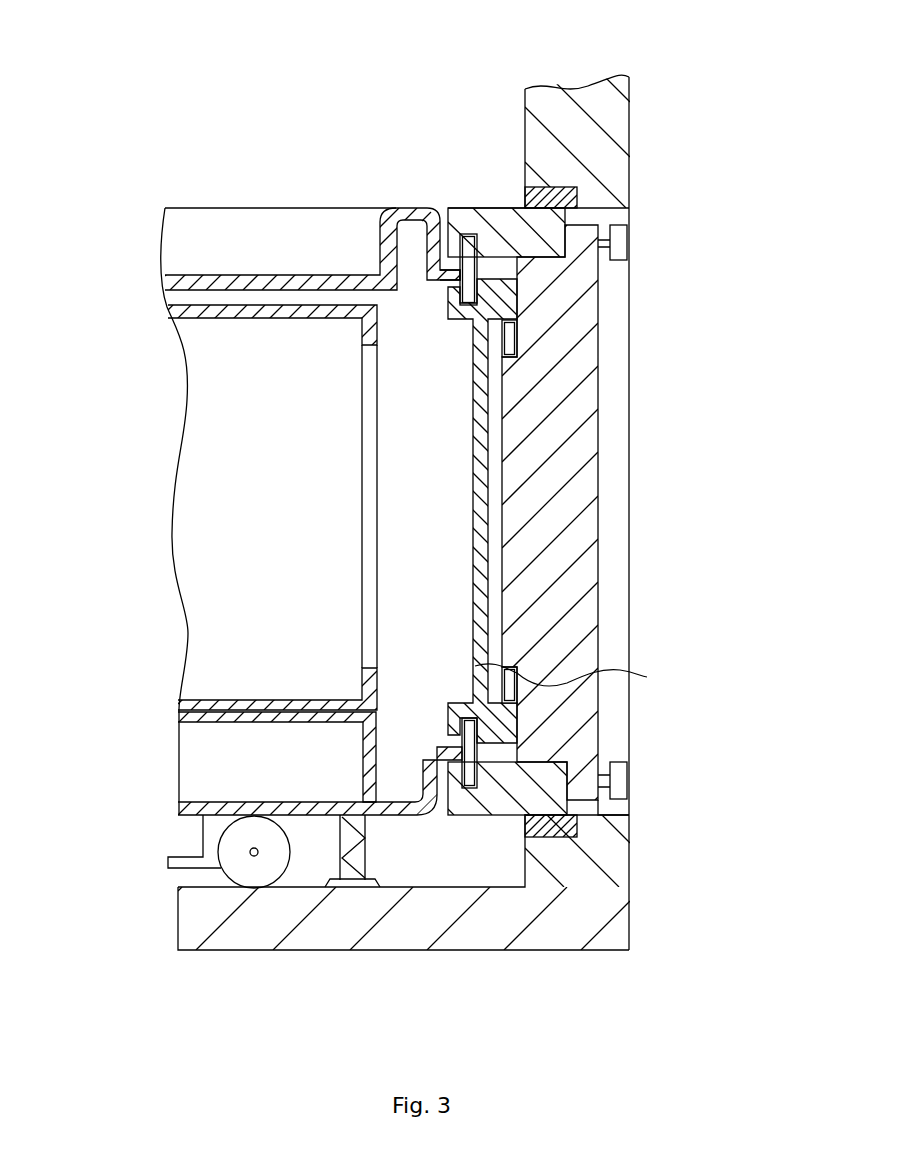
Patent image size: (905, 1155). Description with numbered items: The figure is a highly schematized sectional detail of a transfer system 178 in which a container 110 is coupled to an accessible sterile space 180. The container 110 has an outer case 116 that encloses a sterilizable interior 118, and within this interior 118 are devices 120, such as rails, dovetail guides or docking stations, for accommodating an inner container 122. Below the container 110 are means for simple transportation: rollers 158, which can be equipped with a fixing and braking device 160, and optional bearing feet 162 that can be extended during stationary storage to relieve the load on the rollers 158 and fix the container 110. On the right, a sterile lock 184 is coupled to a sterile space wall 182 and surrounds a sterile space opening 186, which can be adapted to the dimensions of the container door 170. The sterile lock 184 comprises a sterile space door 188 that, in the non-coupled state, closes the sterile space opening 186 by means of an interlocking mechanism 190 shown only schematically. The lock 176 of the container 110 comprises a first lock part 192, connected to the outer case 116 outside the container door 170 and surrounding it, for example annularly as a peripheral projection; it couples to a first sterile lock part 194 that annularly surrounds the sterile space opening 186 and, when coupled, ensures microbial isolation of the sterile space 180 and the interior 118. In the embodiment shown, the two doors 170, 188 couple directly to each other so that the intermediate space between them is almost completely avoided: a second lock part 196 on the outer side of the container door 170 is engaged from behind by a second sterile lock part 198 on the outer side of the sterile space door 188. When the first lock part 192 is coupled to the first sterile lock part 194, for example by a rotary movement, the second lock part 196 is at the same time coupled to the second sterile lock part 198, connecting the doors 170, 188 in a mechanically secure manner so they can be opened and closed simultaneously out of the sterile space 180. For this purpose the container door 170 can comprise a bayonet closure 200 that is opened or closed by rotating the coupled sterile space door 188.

The container 110 is at (187, 204).
The outer case 116 is at (390, 233).
The sterilizable interior 118 is at (441, 572).
The devices for accommodating an inner container 120 is at (368, 750).
The inner container 122 is at (202, 321).
The rollers 158 is at (255, 872).
The fixing and braking device 160 is at (172, 861).
The bearing feet 162 is at (362, 866).
The container door 170 is at (478, 500).
The lock 176 is at (433, 293).
The transfer system 178 is at (385, 97).
The sterile space 180 is at (691, 540).
The sterile space wall 182 is at (620, 132).
The sterile lock 184 is at (492, 204).
The sterile space opening 186 is at (618, 415).
The sterile space door 188 is at (592, 612).
The interlocking mechanism 190 is at (620, 243).
The first lock part 192 is at (455, 240).
The first sterile lock part 194 is at (462, 235).
The second lock part 196 is at (510, 678).
The second sterile lock part 198 is at (475, 666).
The bayonet closure 200 is at (445, 310).